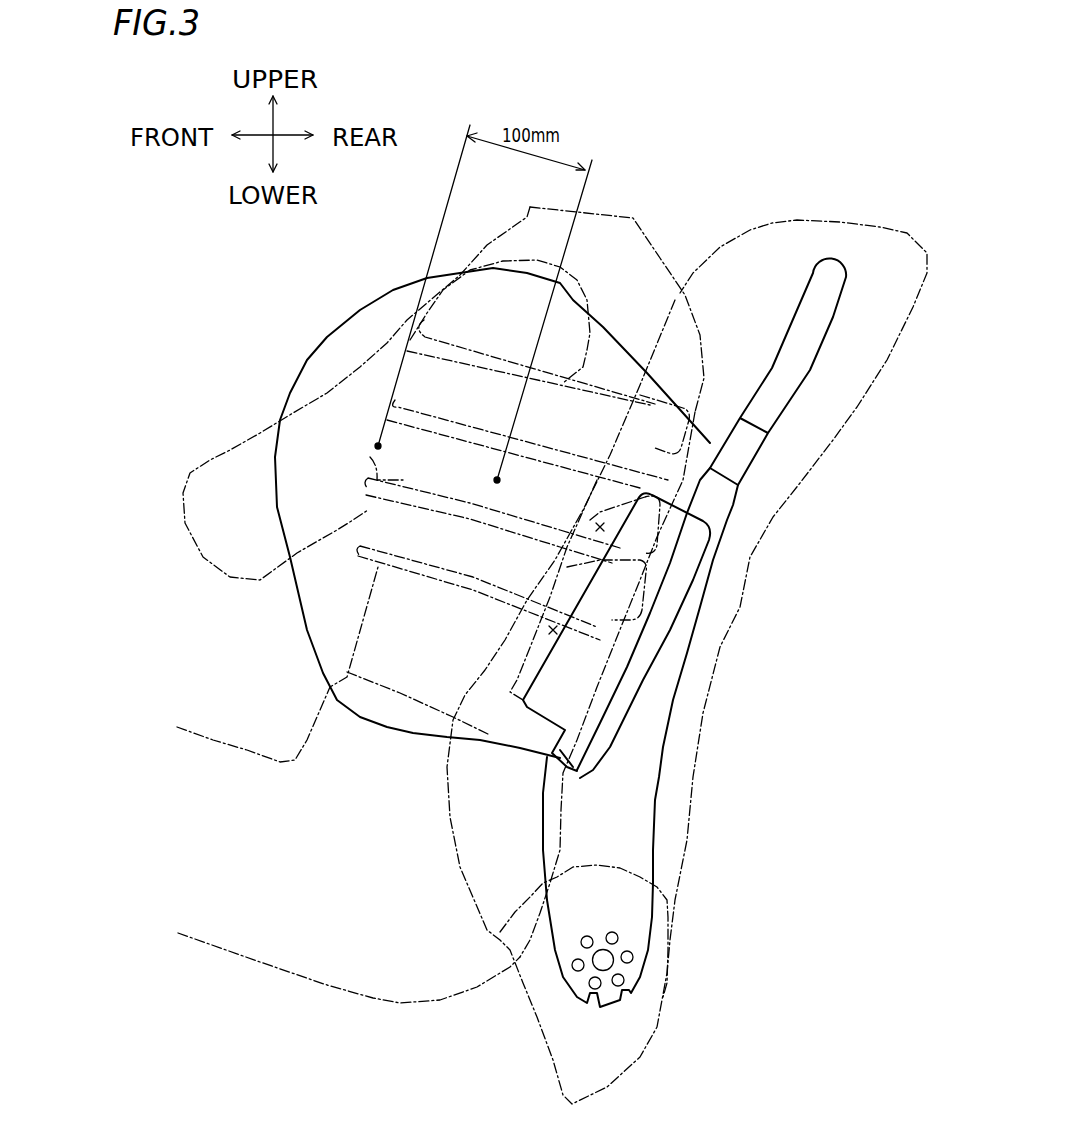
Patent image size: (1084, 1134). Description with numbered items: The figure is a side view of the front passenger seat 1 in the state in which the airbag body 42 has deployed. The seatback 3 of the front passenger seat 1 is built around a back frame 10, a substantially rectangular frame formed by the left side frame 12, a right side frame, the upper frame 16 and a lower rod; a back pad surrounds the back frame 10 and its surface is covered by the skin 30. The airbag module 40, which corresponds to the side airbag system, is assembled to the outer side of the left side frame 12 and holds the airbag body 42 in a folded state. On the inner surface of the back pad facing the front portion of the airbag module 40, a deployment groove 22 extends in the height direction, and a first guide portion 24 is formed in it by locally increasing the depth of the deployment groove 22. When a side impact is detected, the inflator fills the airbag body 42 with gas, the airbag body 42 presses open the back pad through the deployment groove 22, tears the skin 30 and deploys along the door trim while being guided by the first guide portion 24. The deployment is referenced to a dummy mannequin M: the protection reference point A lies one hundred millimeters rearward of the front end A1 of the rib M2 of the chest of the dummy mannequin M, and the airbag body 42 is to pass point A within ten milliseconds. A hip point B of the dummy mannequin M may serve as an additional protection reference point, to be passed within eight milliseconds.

The front passenger seat 1 is at (838, 133).
The seatback 3 is at (843, 216).
The skin 30 is at (748, 230).
The back frame 10 is at (717, 593).
The upper frame 16 is at (797, 360).
The left side frame 12 is at (637, 777).
The first guide portion 24 is at (713, 557).
The airbag module 40 is at (580, 688).
The deployment groove 22 is at (605, 648).
The airbag body 42 is at (307, 632).
The dummy mannequin M is at (607, 214).
The rib M2 is at (370, 457).
The front end of rib A1 is at (376, 446).
The point A is at (499, 481).
The point B is at (396, 880).